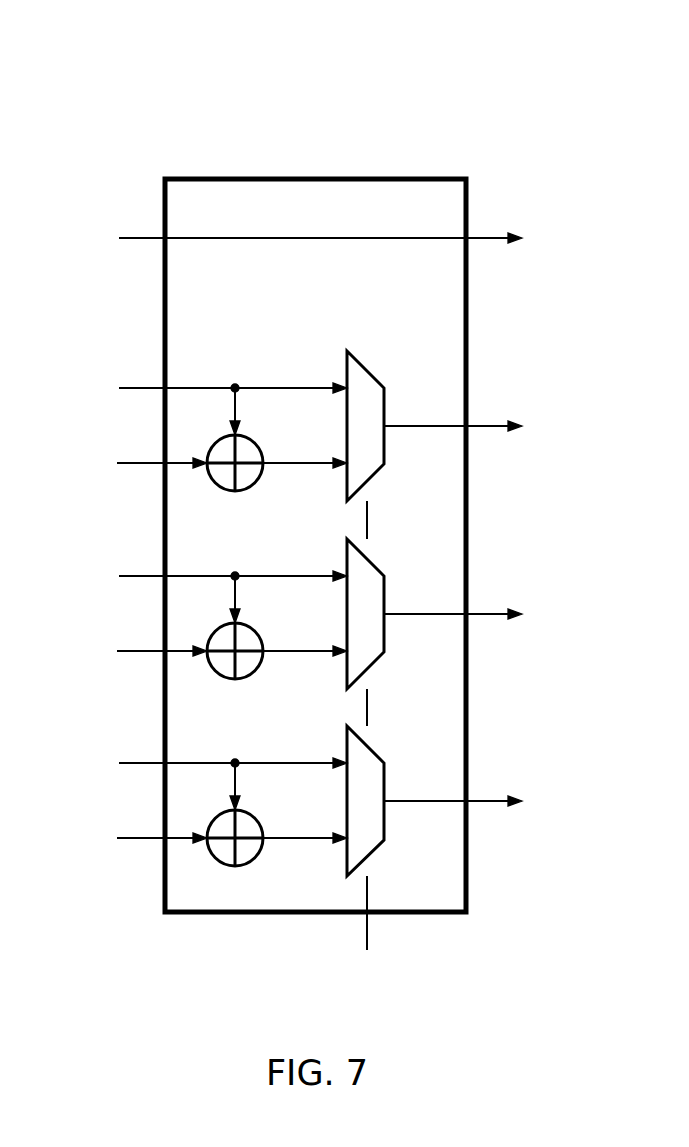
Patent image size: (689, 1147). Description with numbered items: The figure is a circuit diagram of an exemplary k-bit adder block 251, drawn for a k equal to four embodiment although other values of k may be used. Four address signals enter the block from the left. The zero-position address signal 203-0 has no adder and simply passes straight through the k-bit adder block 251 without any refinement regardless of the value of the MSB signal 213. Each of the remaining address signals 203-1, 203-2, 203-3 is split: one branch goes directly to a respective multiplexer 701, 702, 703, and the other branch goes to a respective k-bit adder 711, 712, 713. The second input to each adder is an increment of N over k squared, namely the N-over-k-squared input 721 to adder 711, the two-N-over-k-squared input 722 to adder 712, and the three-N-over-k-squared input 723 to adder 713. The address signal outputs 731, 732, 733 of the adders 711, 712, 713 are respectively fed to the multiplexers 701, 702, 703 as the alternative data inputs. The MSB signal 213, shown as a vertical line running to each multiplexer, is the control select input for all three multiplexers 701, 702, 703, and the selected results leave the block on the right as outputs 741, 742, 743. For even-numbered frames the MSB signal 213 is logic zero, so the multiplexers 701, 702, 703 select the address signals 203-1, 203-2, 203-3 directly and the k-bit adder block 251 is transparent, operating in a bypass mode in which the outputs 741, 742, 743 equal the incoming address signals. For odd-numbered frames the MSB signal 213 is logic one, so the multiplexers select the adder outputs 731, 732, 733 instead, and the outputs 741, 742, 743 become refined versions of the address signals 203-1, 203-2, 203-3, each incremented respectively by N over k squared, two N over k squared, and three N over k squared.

The k-bit adder block 251 is at (466, 179).
The address signal 203-0 is at (124, 238).
The address signal 203-1 is at (124, 388).
The address signal 203-2 is at (122, 576).
The address signal 203-3 is at (122, 763).
The N/k squared input 721 is at (122, 463).
The 2N/k squared input 722 is at (122, 651).
The 3N/k squared input 723 is at (122, 838).
The k-bit adder 711 is at (258, 486).
The k-bit adder 712 is at (258, 674).
The k-bit adder 713 is at (258, 861).
The address signal output 731 is at (278, 462).
The address signal output 732 is at (281, 650).
The address signal output 733 is at (281, 837).
The multiplexer 701 is at (384, 386).
The multiplexer 702 is at (384, 574).
The multiplexer 703 is at (384, 761).
The output 741 is at (478, 424).
The output 742 is at (478, 612).
The output 743 is at (478, 799).
The MSB signal 213 is at (369, 941).